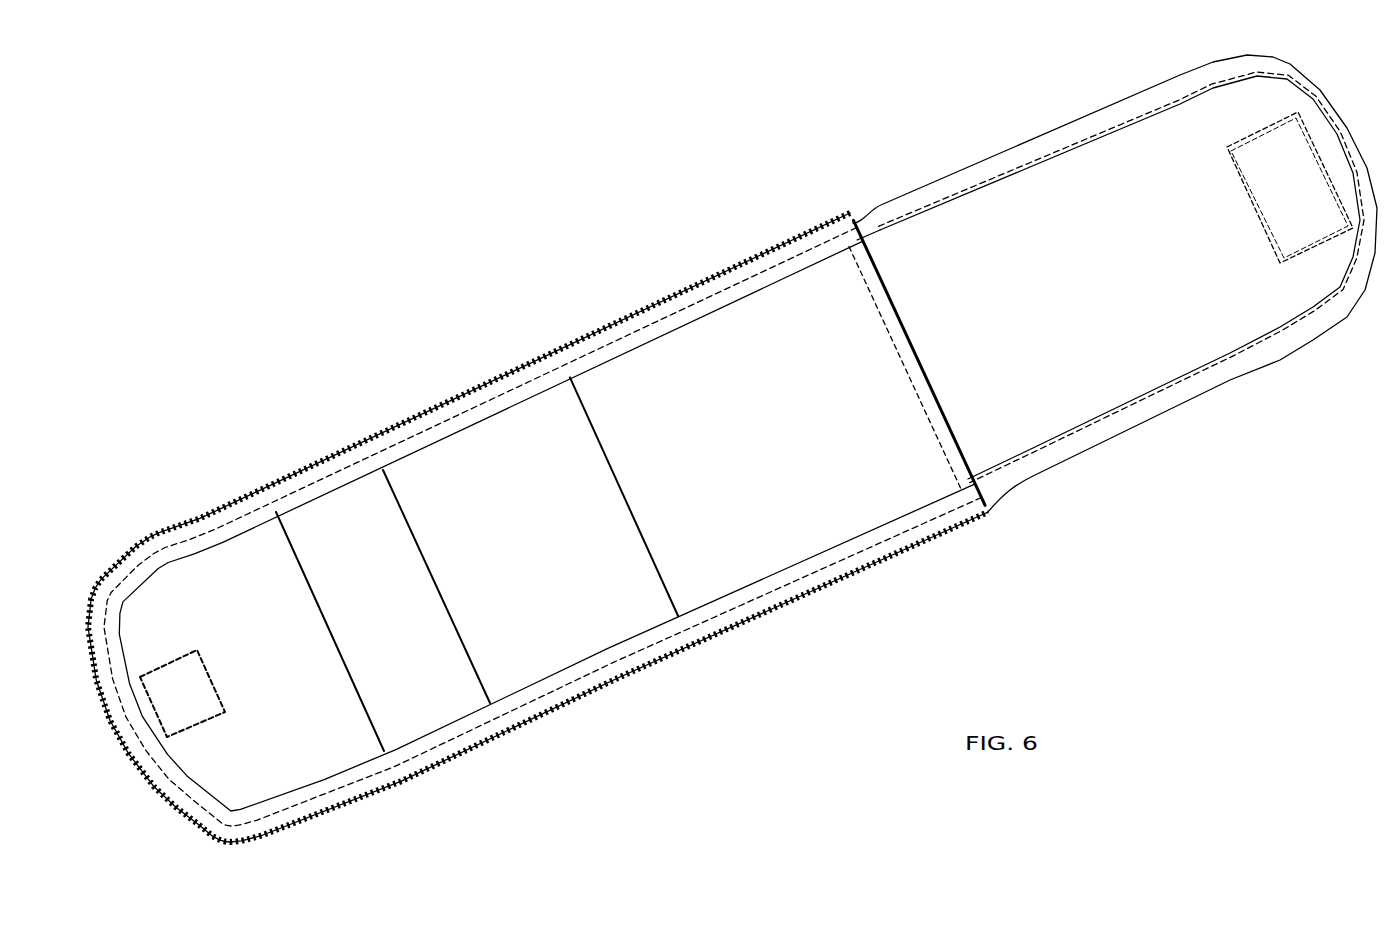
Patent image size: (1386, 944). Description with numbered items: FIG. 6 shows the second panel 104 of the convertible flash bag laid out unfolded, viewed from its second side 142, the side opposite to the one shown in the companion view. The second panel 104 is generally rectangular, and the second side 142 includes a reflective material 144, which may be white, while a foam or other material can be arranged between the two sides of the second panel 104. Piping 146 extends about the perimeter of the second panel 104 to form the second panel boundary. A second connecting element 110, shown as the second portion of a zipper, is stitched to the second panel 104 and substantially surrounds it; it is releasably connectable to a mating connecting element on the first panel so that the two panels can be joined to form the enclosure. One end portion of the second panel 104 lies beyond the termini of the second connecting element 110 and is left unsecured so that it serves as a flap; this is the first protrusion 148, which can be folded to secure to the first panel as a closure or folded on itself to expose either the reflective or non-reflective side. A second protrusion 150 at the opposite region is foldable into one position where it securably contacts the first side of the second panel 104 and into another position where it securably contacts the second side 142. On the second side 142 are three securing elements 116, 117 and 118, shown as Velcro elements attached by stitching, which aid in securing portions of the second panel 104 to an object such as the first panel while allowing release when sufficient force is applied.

The second panel 104 is at (401, 279).
The second connecting element 110 is at (170, 517).
The securing element 116 is at (1295, 195).
The securing element 117 is at (337, 522).
The securing element 118 is at (183, 693).
The second side 142 is at (727, 507).
The reflective material 144 is at (678, 380).
The piping 146 is at (1165, 397).
The first protrusion 148 is at (1043, 243).
The second protrusion 150 is at (283, 720).